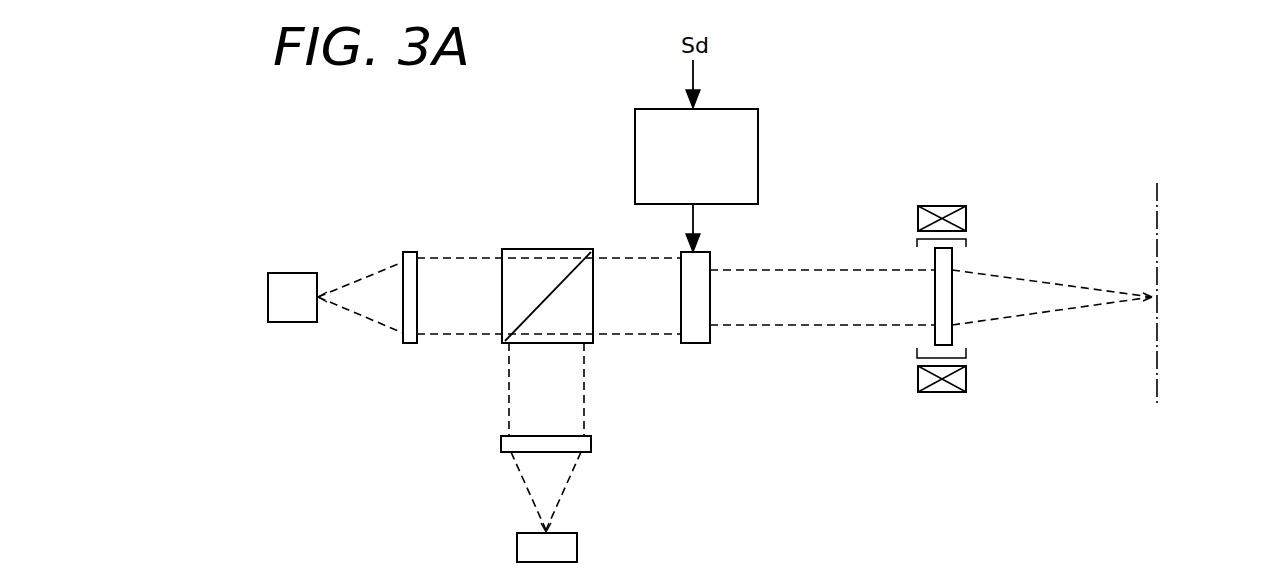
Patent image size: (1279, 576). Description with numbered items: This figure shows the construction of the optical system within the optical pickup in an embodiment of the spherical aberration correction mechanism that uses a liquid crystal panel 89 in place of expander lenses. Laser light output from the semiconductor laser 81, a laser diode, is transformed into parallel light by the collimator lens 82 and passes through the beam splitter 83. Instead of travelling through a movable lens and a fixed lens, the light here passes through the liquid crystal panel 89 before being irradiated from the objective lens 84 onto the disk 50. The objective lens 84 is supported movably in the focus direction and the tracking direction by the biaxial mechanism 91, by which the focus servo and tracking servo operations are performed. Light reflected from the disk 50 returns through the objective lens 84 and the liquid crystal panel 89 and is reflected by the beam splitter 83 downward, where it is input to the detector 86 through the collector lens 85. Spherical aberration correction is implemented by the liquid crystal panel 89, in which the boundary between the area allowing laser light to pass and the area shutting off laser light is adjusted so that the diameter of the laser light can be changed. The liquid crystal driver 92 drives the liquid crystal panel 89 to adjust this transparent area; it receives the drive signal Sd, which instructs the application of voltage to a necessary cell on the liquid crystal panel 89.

The semiconductor laser 81 is at (292, 273).
The collimator lens 82 is at (413, 252).
The beam splitter 83 is at (537, 249).
The objective lens 84 is at (952, 292).
The collector lens 85 is at (501, 444).
The detector 86 is at (517, 548).
The liquid crystal panel 89 is at (693, 343).
The biaxial mechanism 91 is at (943, 206).
The liquid crystal driver 92 is at (758, 137).
The disk 50 is at (1157, 210).